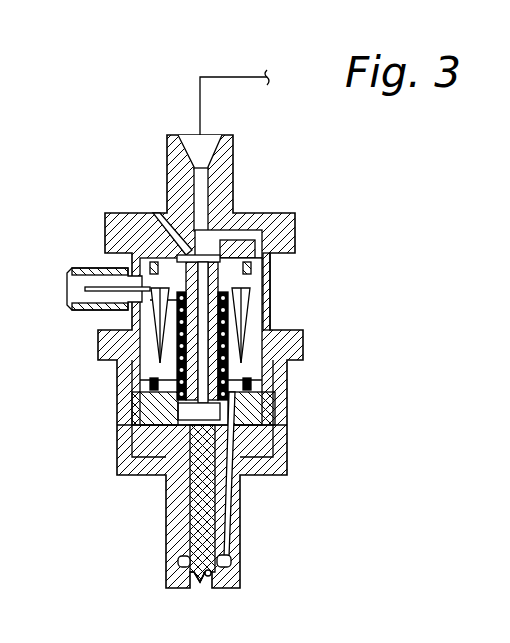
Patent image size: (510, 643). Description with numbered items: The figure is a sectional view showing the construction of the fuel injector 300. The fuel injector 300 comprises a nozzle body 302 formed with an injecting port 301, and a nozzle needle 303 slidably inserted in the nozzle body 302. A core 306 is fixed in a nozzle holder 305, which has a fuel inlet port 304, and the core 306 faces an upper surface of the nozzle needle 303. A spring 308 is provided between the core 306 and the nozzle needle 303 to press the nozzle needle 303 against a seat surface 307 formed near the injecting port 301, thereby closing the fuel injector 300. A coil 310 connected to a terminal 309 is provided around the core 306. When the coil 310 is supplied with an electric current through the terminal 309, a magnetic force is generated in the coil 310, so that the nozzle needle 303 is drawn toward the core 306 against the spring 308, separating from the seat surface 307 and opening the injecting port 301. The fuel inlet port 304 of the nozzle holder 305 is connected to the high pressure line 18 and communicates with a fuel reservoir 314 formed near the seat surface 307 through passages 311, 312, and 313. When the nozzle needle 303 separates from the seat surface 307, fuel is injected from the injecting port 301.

The high pressure line 18 is at (231, 77).
The fuel injector 300 is at (284, 213).
The injecting port 301 is at (200, 588).
The nozzle body 302 is at (180, 520).
The nozzle needle 303 is at (190, 545).
The fuel inlet port 304 is at (211, 137).
The nozzle holder 305 is at (228, 196).
The core 306 is at (247, 280).
The seat surface 307 is at (212, 575).
The spring 308 is at (280, 345).
The terminal 309 is at (93, 287).
The coil 310 is at (240, 318).
The passage 311 is at (262, 236).
The passage 312 is at (250, 418).
The passage 313 is at (255, 445).
The fuel reservoir 314 is at (228, 560).